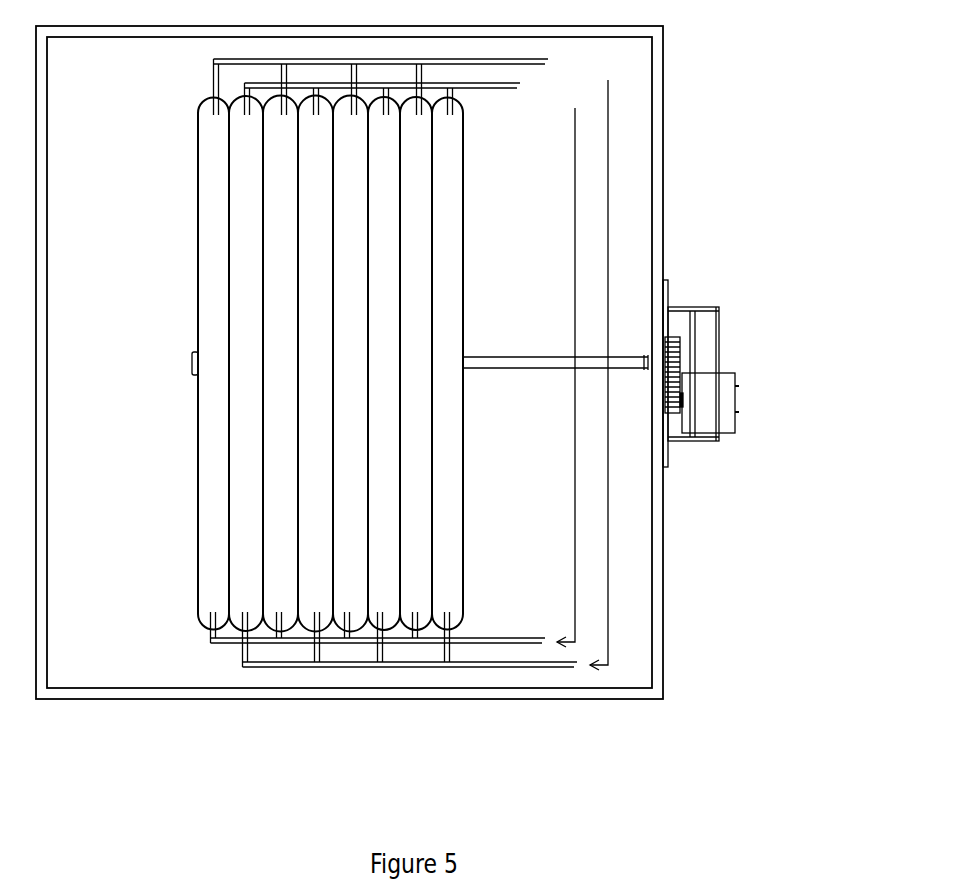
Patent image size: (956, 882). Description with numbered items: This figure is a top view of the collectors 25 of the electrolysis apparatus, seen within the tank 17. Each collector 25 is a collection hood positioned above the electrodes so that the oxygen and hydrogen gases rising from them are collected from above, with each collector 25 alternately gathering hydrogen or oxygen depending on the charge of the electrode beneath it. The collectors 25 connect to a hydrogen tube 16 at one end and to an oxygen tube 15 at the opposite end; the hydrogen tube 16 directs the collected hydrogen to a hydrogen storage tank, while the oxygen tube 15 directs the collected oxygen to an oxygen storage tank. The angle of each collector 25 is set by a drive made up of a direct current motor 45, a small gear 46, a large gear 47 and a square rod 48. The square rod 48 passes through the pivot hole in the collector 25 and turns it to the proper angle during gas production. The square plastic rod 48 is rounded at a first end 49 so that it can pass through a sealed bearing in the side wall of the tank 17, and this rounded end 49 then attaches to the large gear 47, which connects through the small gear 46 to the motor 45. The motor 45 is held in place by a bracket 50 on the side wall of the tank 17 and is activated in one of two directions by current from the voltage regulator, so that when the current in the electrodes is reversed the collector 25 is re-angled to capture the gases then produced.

The oxygen tube 15 is at (558, 61).
The hydrogen tube 16 is at (530, 85).
The tank 17 is at (657, 212).
The collector 25 is at (463, 590).
The direct current motor 45 is at (702, 398).
The small gear 46 is at (708, 379).
The large gear 47 is at (672, 349).
The square rod 48 is at (608, 456).
The first end 49 is at (698, 436).
The bracket 50 is at (720, 318).